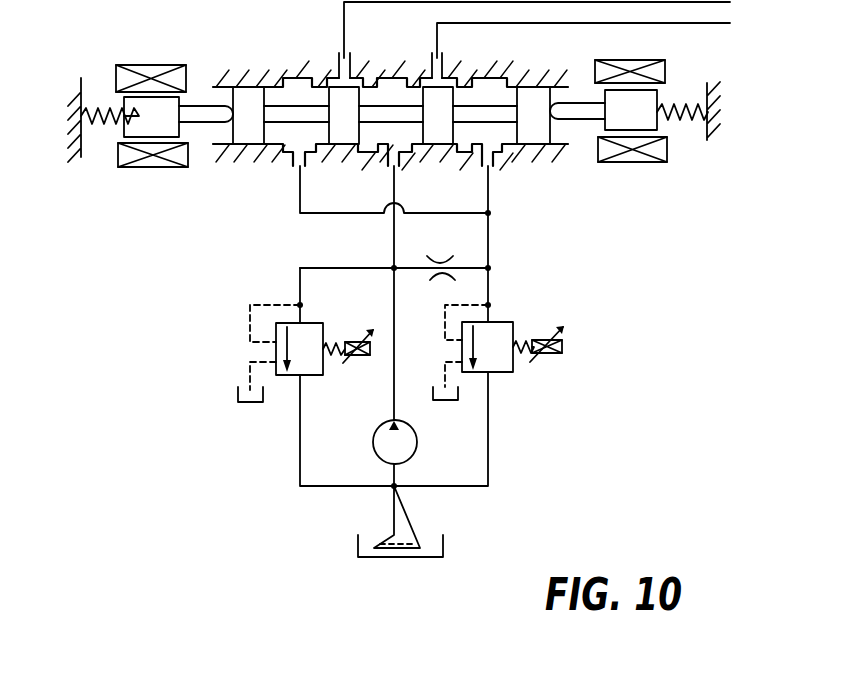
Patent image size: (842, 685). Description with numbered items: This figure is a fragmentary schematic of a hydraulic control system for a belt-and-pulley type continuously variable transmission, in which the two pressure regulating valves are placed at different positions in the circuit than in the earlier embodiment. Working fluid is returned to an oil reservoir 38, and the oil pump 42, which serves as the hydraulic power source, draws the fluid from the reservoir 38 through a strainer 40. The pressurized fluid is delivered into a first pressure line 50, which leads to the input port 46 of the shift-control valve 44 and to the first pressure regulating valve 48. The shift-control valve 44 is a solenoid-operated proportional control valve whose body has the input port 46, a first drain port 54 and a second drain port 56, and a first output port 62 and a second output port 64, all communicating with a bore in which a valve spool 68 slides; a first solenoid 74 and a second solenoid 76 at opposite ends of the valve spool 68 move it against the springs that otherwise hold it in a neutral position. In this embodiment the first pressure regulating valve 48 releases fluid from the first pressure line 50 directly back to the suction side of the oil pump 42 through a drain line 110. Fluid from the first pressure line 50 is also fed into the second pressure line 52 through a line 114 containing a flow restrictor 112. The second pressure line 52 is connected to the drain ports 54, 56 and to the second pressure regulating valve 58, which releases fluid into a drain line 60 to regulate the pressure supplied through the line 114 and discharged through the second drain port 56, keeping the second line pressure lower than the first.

The oil reservoir 38 is at (443, 544).
The strainer 40 is at (390, 538).
The oil pump 42 is at (374, 441).
The shift-control valve 44 is at (152, 221).
The input port 46 is at (397, 162).
The first pressure regulating valve 48 is at (313, 368).
The first pressure line 50 is at (393, 293).
The second pressure line 52 is at (489, 243).
The first drain port 54 is at (292, 164).
The second drain port 56 is at (494, 163).
The second pressure regulating valve 58 is at (502, 365).
The drain line 60 is at (489, 460).
The first output port 62 is at (339, 68).
The second output port 64 is at (436, 68).
The valve spool 68 is at (531, 158).
The first solenoid 74 is at (150, 57).
The second solenoid 76 is at (645, 50).
The drain line 110 is at (300, 455).
The flow restrictor 112 is at (440, 257).
The line 114 is at (413, 269).